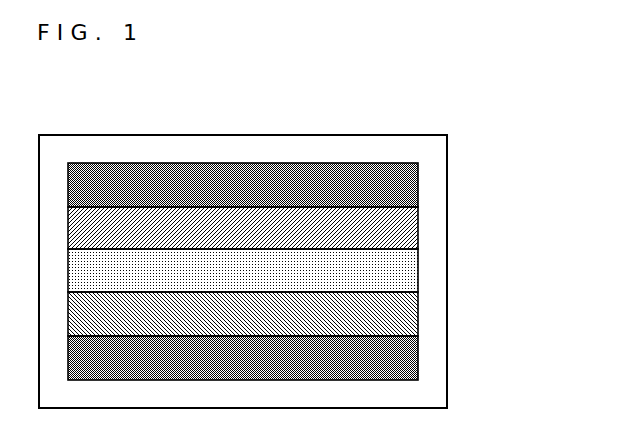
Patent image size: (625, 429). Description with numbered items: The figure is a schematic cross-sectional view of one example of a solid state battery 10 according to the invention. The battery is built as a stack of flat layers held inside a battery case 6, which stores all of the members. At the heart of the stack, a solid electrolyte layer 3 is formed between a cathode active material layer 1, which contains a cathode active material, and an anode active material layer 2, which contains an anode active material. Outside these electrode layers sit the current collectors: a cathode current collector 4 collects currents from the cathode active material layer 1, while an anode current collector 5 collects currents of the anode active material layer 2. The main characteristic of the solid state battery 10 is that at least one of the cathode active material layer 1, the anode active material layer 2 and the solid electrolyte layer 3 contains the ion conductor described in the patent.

The solid state battery 10 is at (441, 100).
The cathode active material layer 1 is at (402, 307).
The anode active material layer 2 is at (402, 220).
The solid electrolyte layer 3 is at (402, 263).
The cathode current collector 4 is at (402, 350).
The anode current collector 5 is at (402, 177).
The battery case 6 is at (430, 395).